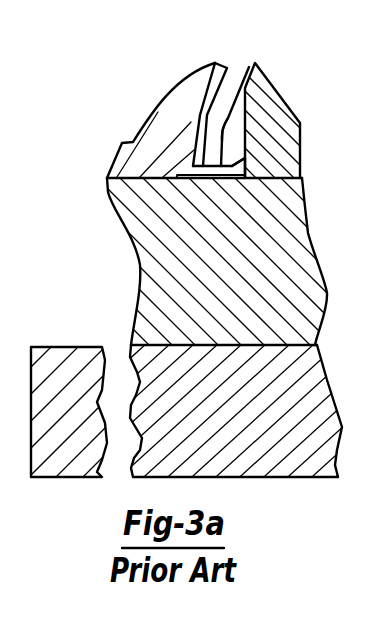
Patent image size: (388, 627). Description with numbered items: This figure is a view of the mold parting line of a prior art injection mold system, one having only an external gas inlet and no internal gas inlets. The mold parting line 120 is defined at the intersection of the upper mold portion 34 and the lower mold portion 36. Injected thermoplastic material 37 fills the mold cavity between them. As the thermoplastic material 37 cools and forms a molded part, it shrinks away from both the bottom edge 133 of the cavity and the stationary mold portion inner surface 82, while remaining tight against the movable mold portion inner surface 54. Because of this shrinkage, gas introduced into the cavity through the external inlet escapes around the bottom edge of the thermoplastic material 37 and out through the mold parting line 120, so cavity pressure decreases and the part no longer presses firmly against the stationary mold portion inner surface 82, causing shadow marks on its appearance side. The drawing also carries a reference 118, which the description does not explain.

The upper mold portion 34 is at (187, 90).
The lower mold portion 36 is at (298, 118).
The injected thermoplastic material 37 is at (218, 89).
The movable mold portion inner surface 54 is at (248, 173).
The stationary mold portion inner surface 82 is at (186, 153).
The plate 118 is at (193, 128).
The mold parting line 120 is at (108, 178).
The bottom edge of the cavity 133 is at (229, 120).